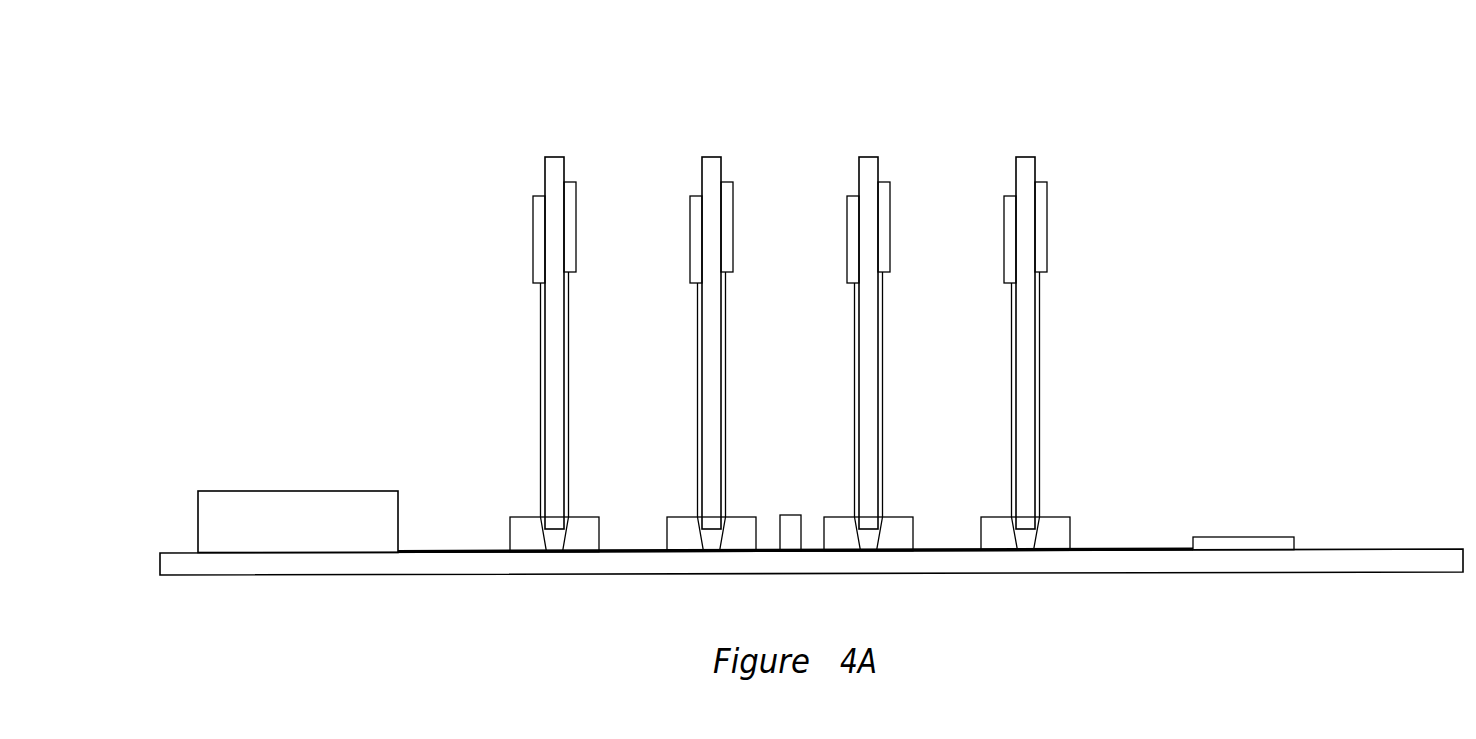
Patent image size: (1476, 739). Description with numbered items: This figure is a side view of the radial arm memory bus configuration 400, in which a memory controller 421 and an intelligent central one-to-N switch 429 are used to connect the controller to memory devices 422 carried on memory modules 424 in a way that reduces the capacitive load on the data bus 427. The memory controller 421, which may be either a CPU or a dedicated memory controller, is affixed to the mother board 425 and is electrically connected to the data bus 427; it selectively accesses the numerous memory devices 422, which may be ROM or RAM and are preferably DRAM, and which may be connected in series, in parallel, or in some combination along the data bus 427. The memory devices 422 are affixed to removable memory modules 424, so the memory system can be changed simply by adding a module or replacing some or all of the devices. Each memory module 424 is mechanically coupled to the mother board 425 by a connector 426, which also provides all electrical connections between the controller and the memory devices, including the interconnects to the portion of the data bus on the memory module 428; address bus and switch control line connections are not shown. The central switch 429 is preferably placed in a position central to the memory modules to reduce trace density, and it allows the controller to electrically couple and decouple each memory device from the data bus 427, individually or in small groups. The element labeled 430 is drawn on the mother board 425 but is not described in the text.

The radial arm memory bus configuration 400 is at (1315, 74).
The memory controller 421 is at (300, 491).
The memory devices 422 is at (533, 213).
The memory modules 424 is at (554, 157).
The mother board 425 is at (1352, 549).
The connector 426 is at (588, 517).
The data bus 427 is at (453, 550).
The portion of the data bus on the memory module 428 is at (540, 362).
The intelligent central 1:N switch 429 is at (793, 515).
The connector pad 430 is at (1262, 537).